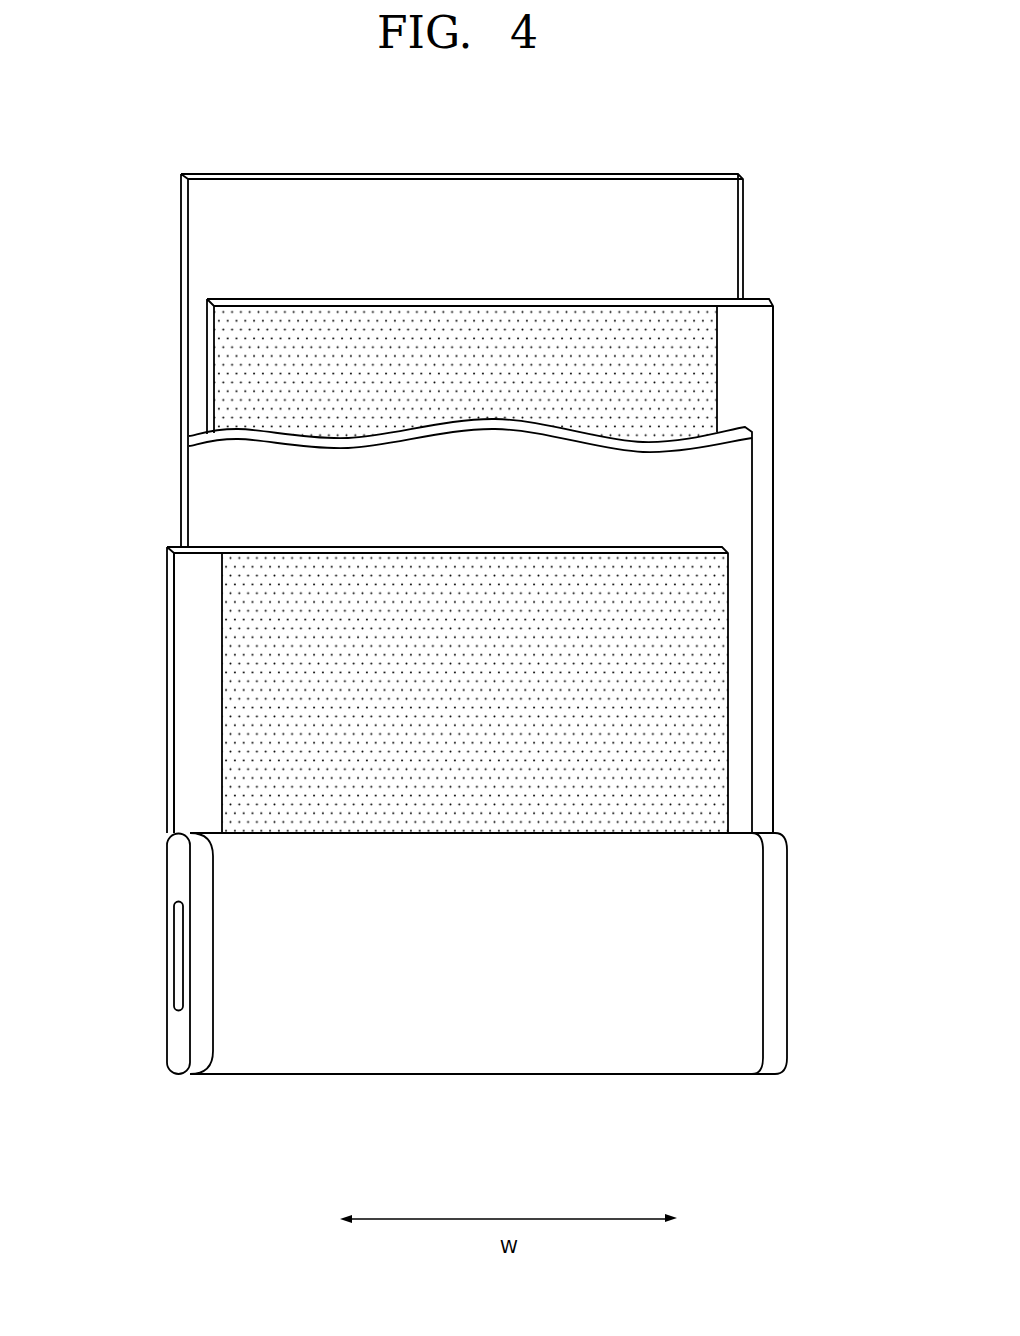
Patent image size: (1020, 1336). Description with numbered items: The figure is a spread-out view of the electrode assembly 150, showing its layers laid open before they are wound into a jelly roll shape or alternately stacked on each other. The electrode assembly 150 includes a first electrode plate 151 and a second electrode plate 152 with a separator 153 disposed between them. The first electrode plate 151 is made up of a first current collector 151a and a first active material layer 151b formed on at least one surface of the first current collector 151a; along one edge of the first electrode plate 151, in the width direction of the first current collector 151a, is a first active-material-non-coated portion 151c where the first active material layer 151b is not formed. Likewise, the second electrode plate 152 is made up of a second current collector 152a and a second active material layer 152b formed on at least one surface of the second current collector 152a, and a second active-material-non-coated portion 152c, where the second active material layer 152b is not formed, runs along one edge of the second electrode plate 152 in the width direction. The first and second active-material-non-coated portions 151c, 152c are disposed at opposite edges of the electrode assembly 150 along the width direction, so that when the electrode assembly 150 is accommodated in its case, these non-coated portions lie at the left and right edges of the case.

The electrode assembly 150 is at (503, 1050).
The first electrode plate 151 is at (467, 541).
The first current collector 151a is at (487, 303).
The first active material layer 151b is at (235, 362).
The first active-material-non-coated portion 151c is at (760, 377).
The second electrode plate 152 is at (453, 664).
The second current collector 152a is at (479, 548).
The second active material layer 152b is at (708, 707).
The second active-material-non-coated portion 152c is at (188, 747).
The separator 153 is at (172, 254).